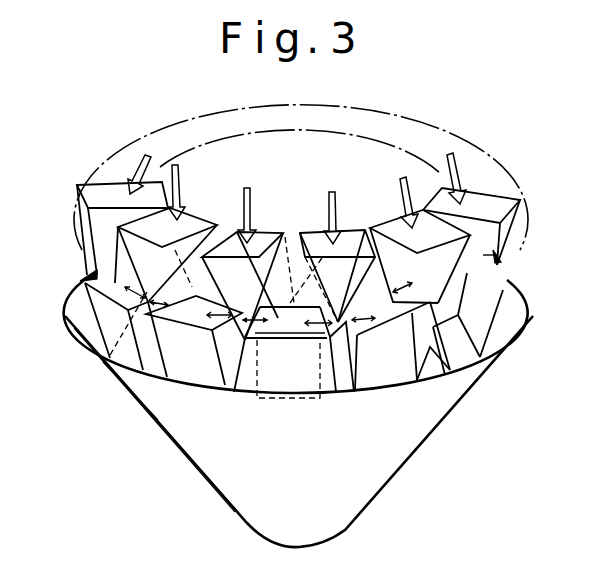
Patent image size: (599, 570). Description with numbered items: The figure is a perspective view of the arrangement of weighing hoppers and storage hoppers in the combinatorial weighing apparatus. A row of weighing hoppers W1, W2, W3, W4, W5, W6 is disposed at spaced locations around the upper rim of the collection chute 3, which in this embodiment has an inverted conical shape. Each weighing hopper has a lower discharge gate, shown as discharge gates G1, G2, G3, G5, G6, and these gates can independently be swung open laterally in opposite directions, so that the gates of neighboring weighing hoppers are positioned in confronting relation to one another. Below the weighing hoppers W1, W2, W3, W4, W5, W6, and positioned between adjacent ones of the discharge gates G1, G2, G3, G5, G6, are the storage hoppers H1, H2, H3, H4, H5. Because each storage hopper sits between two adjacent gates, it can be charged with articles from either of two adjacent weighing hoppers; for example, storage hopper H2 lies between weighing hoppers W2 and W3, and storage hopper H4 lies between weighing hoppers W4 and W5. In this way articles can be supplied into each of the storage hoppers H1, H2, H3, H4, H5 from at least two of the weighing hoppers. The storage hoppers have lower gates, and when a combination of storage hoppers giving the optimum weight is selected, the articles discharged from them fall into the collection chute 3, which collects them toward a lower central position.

The collection chute 3 is at (447, 410).
The weighing hopper W1 is at (108, 185).
The weighing hopper W2 is at (200, 218).
The weighing hopper W3 is at (282, 232).
The weighing hopper W4 is at (318, 228).
The weighing hopper W5 is at (387, 217).
The weighing hopper W6 is at (477, 202).
The discharge gate G1 is at (80, 275).
The discharge gate G2 is at (157, 273).
The discharge gate G3 is at (220, 310).
The discharge gate G5 is at (420, 274).
The discharge gate G6 is at (512, 240).
The storage hopper H1 is at (115, 313).
The storage hopper H2 is at (207, 390).
The storage hopper H3 is at (275, 372).
The storage hopper H4 is at (368, 392).
The storage hopper H5 is at (458, 360).